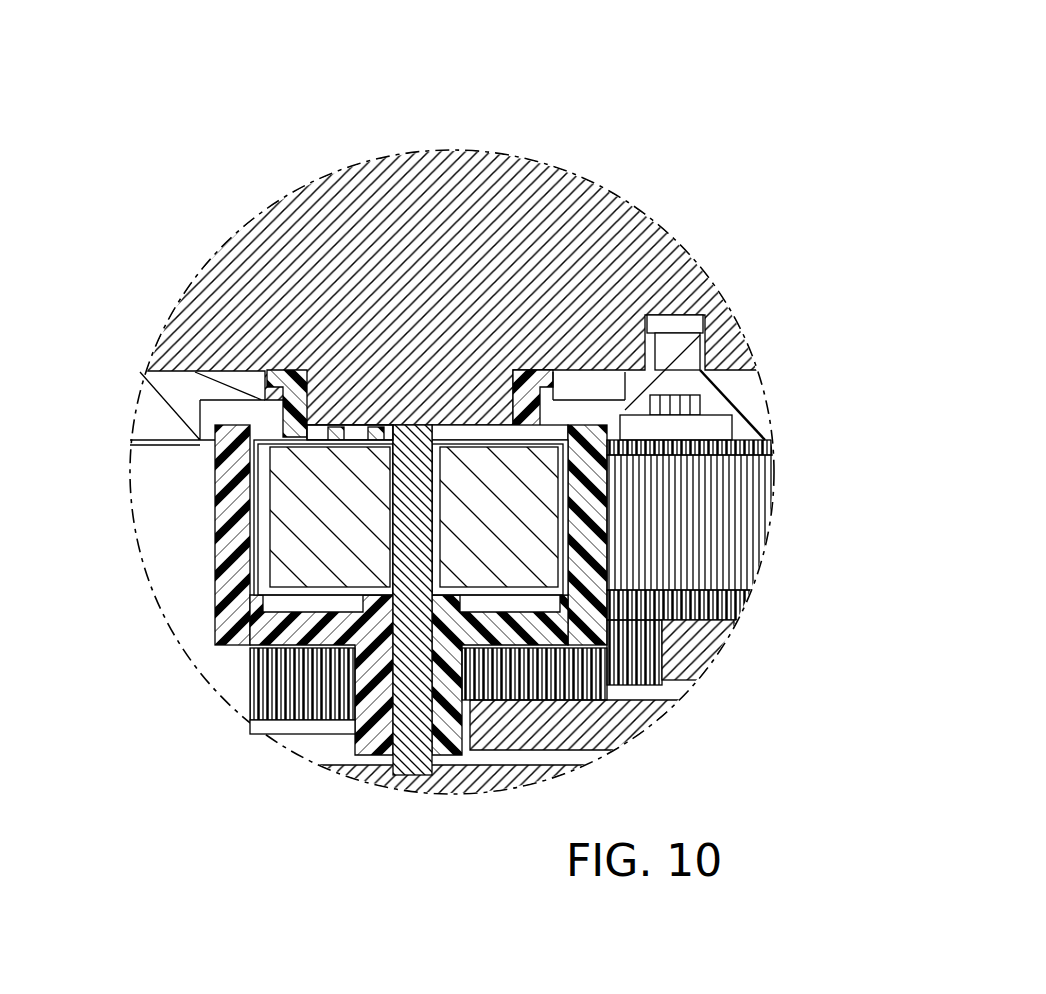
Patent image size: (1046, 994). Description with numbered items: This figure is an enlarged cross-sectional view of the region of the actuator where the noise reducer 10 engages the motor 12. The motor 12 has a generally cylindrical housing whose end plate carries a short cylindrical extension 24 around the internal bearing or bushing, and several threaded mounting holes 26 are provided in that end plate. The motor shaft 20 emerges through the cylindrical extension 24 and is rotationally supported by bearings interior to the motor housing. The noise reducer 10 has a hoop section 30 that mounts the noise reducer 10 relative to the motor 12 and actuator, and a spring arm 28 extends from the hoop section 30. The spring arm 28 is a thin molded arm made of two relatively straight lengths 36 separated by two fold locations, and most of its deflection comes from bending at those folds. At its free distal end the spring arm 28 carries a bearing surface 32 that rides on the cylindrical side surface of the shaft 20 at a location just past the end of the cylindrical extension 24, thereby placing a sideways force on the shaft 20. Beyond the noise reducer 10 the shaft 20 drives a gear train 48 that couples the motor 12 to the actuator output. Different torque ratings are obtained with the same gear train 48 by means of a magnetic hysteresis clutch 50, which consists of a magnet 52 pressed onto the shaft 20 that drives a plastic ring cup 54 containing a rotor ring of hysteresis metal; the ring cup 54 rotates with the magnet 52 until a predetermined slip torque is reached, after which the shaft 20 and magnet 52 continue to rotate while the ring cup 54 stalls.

The noise reducer 10 is at (288, 366).
The motor 12 is at (515, 200).
The motor shaft 20 is at (300, 546).
The cylindrical extension 24 is at (482, 392).
The threaded mounting holes 26 is at (690, 323).
The spring arm 28 is at (378, 428).
The hoop section 30 is at (270, 387).
The bearing surface 32 is at (393, 433).
The relatively straight lengths 36 is at (338, 428).
The gear train 48 is at (662, 548).
The magnetic hysteresis clutch 50 is at (207, 534).
The magnet 52 is at (413, 544).
The ring cup 54 is at (228, 504).